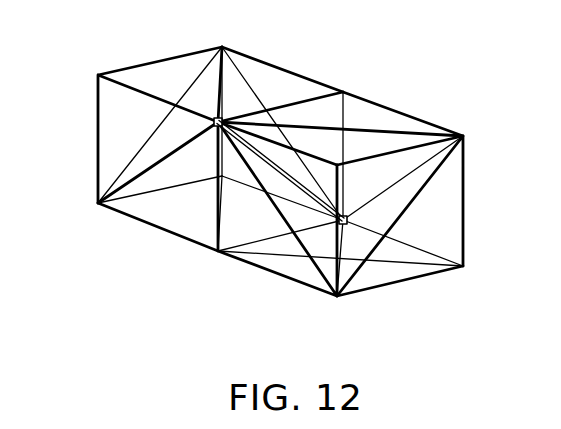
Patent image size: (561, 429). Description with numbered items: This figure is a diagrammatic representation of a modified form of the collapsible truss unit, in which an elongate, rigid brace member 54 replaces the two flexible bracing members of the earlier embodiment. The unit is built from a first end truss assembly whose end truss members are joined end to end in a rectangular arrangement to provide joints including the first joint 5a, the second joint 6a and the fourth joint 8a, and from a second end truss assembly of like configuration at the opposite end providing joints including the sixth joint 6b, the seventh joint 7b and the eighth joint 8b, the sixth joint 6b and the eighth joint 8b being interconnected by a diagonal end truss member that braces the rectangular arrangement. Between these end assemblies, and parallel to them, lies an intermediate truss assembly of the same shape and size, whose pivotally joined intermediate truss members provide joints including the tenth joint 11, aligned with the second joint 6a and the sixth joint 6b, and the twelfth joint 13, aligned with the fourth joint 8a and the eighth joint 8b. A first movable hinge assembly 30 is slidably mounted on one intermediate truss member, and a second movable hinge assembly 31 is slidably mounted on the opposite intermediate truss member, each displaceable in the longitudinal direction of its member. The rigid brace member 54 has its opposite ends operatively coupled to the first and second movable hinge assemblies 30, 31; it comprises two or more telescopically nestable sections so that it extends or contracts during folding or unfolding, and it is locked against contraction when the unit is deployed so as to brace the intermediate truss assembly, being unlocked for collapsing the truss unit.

The first joint 5a is at (98, 75).
The second joint 6a is at (98, 203).
The fourth joint 8a is at (222, 47).
The eighth joint 8b is at (463, 136).
The seventh joint 7b is at (463, 266).
The sixth joint 6b is at (337, 296).
The tenth joint 11 is at (218, 252).
The twelfth joint 13 is at (343, 92).
The first movable hinge assembly 30 is at (215, 126).
The second movable hinge assembly 31 is at (347, 216).
The rigid brace member 54 is at (268, 167).